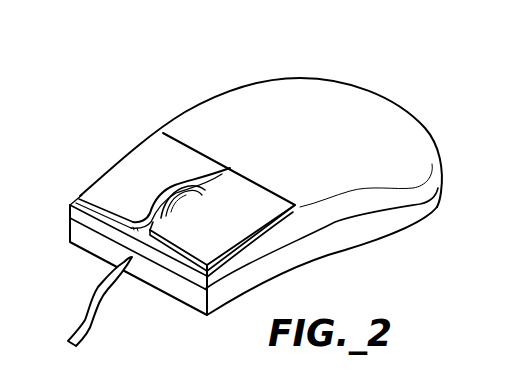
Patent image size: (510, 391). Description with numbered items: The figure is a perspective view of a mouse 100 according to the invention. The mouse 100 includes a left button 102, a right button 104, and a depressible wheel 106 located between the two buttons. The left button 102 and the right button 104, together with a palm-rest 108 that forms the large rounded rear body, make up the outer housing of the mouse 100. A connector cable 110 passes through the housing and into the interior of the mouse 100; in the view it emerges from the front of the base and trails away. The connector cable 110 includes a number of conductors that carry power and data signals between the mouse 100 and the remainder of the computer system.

The mouse 100 is at (262, 42).
The left button 102 is at (236, 228).
The right button 104 is at (117, 192).
The depressible wheel 106 is at (167, 208).
The palm-rest 108 is at (346, 124).
The connector cable 110 is at (93, 318).